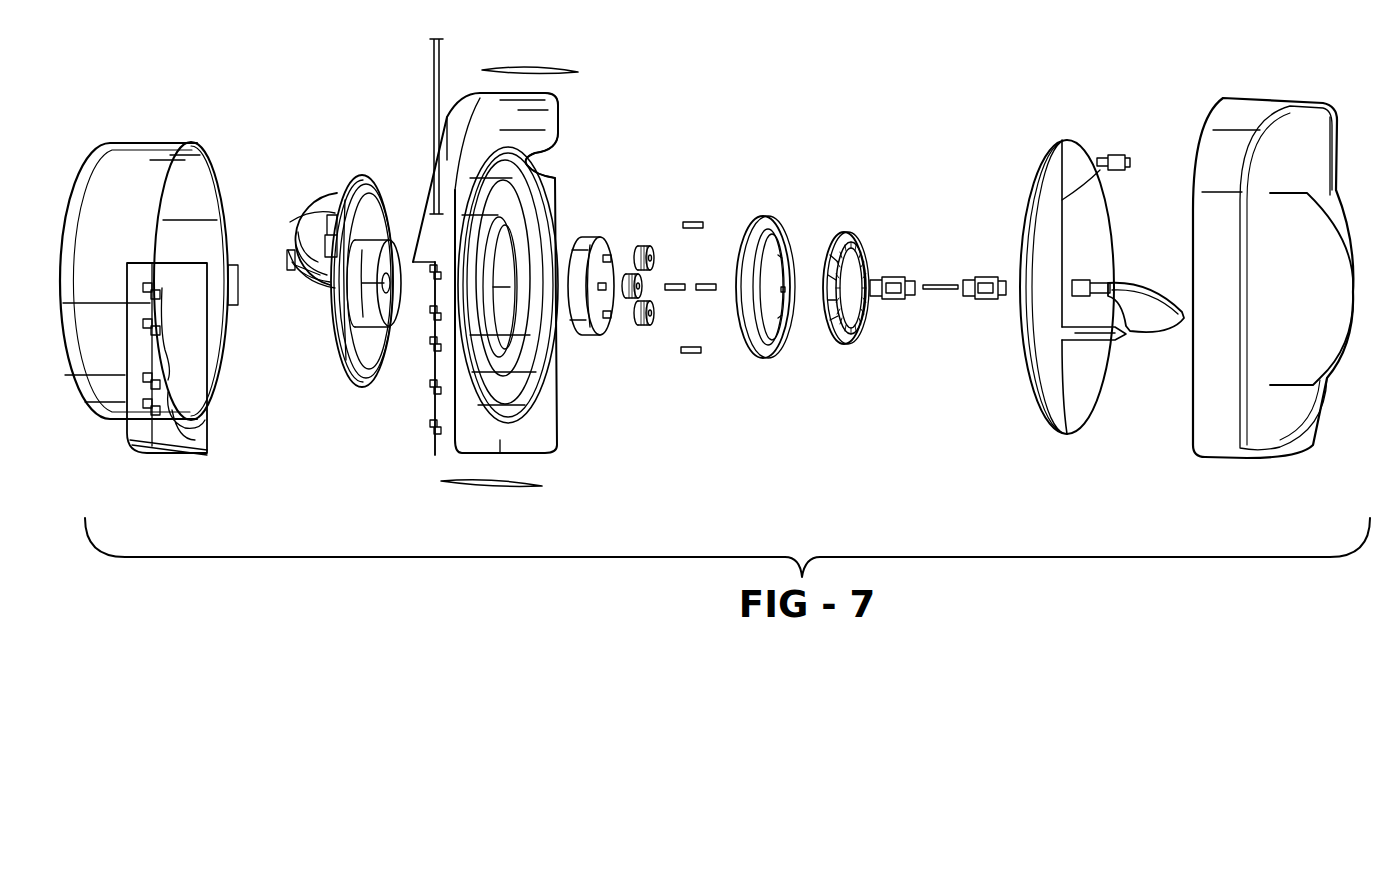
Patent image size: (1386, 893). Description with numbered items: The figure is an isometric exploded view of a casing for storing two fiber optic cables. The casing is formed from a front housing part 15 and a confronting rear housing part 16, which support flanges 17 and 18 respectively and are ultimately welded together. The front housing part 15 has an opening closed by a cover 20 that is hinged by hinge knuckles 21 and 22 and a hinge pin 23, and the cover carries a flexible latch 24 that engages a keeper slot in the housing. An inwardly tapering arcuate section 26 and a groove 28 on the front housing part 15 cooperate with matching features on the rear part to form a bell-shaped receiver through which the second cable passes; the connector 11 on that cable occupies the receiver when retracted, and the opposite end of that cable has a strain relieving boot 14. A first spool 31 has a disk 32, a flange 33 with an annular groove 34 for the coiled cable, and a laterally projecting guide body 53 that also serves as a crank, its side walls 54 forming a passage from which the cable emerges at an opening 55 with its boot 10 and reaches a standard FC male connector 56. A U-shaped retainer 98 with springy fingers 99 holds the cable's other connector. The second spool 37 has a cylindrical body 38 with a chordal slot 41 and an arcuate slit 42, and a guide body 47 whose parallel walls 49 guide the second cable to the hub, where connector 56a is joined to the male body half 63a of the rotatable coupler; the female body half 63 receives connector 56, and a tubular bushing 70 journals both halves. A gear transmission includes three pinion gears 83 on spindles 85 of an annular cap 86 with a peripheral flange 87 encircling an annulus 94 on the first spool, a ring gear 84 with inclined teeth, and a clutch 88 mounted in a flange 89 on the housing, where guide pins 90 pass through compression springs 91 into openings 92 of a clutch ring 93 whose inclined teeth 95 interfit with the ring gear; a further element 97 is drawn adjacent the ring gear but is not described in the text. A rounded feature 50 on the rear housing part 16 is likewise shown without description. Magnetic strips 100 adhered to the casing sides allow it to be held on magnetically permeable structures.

The strain relieving boot 10 is at (318, 290).
The connector 11 is at (1127, 161).
The strain relieving boot 14 is at (1150, 302).
The front housing part 15 is at (428, 470).
The rear housing part 16 is at (1249, 308).
The flange 17 is at (432, 178).
The flange 18 is at (1195, 440).
The cover 20 is at (190, 143).
The hinge knuckles 21 is at (430, 436).
The hinge knuckles 22 is at (162, 312).
The hinge pin 23 is at (433, 50).
The flexible latch 24 is at (236, 305).
The arcuate section 26 is at (547, 113).
The groove 28 is at (548, 159).
The first spool 31 is at (335, 385).
The disk 32 is at (362, 202).
The flange 33 is at (355, 387).
The annular groove 34 is at (345, 350).
The second spool 37 is at (1085, 138).
The cylindrical body 38 is at (1095, 230).
The chordal slot 41 is at (1065, 207).
The arcuate slit 42 is at (1100, 345).
The guide body 47 is at (1130, 283).
The walls 49 is at (1140, 333).
The bulge 50 is at (1335, 224).
The guide body 53 is at (342, 170).
The side walls 54 is at (304, 288).
The opening 55 is at (300, 235).
The FC male connector 56 is at (397, 262).
The FC male connector 56a is at (1075, 294).
The female body half 63 is at (903, 277).
The male body half 63a is at (992, 277).
The tubular bushing 70 is at (938, 285).
The pinion gears 83 is at (645, 248).
The ring gear 84 is at (858, 335).
The spindles 85 is at (603, 292).
The annular cap 86 is at (600, 320).
The peripheral flange 87 is at (596, 240).
The clutch 88 is at (877, 301).
The flange 89 is at (772, 215).
The guide pins 90 is at (515, 222).
The compression springs 91 is at (693, 222).
The openings 92 is at (777, 222).
The clutch ring 93 is at (748, 350).
The annulus 94 is at (375, 330).
The teeth 95 is at (788, 290).
The toothed ring 97 is at (840, 238).
The U-shaped retainer 98 is at (318, 200).
The springy fingers 99 is at (300, 276).
The magnetic strips 100 is at (540, 68).